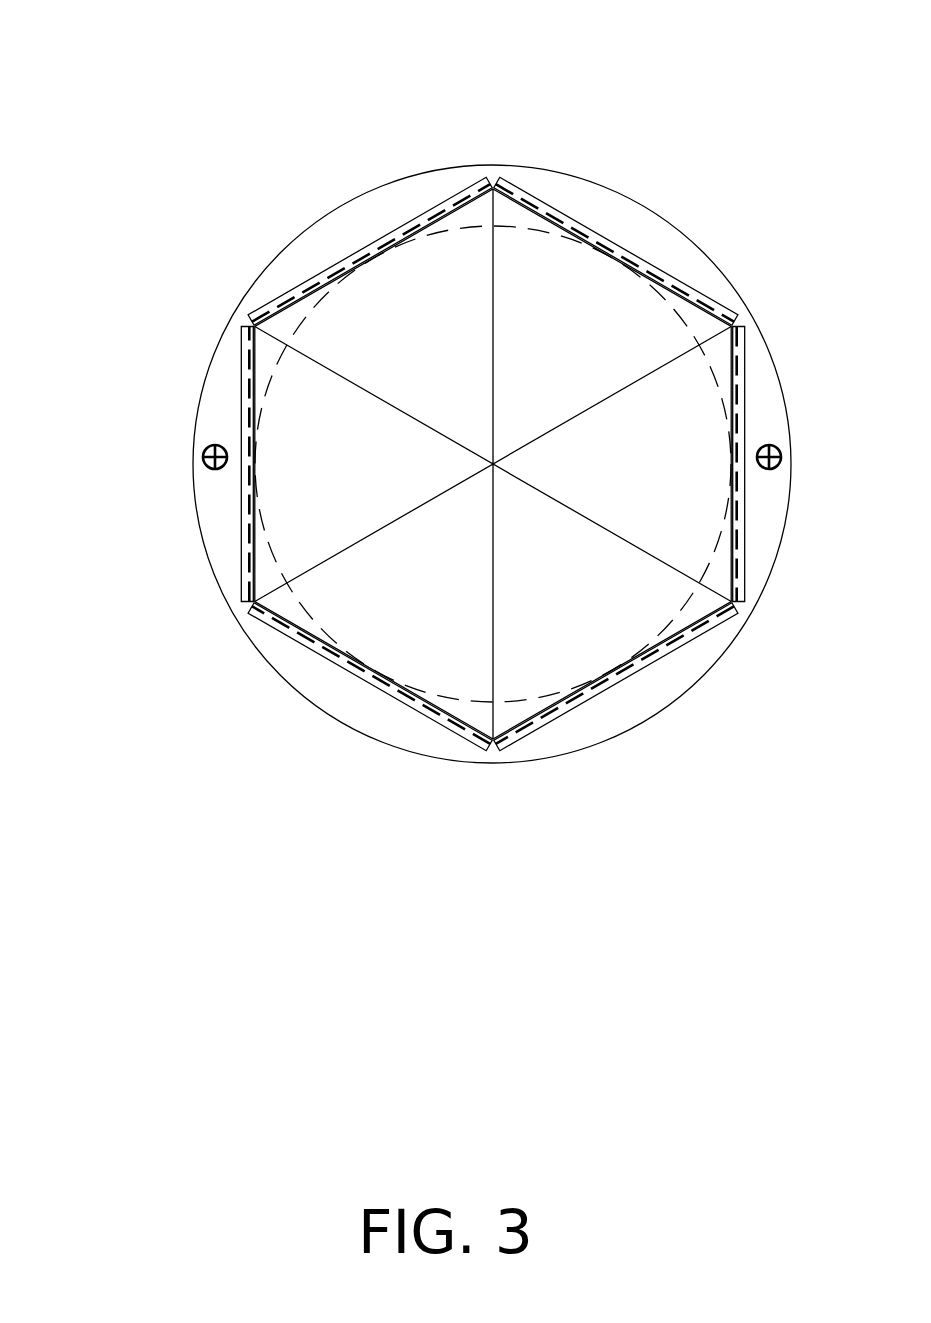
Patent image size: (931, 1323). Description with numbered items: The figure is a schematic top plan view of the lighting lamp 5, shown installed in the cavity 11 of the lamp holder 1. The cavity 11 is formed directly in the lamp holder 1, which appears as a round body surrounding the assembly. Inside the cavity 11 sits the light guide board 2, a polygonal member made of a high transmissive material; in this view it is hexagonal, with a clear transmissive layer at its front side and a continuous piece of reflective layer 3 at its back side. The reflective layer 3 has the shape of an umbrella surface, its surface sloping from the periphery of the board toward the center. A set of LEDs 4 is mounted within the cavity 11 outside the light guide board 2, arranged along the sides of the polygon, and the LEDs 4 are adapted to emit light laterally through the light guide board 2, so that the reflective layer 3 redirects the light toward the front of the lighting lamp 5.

The lamp holder 1 is at (683, 232).
The cavity 11 is at (338, 220).
The light guide board 2 is at (437, 665).
The reflective layer 3 is at (487, 227).
The LEDs 4 is at (293, 633).
The lighting lamp 5 is at (142, 266).